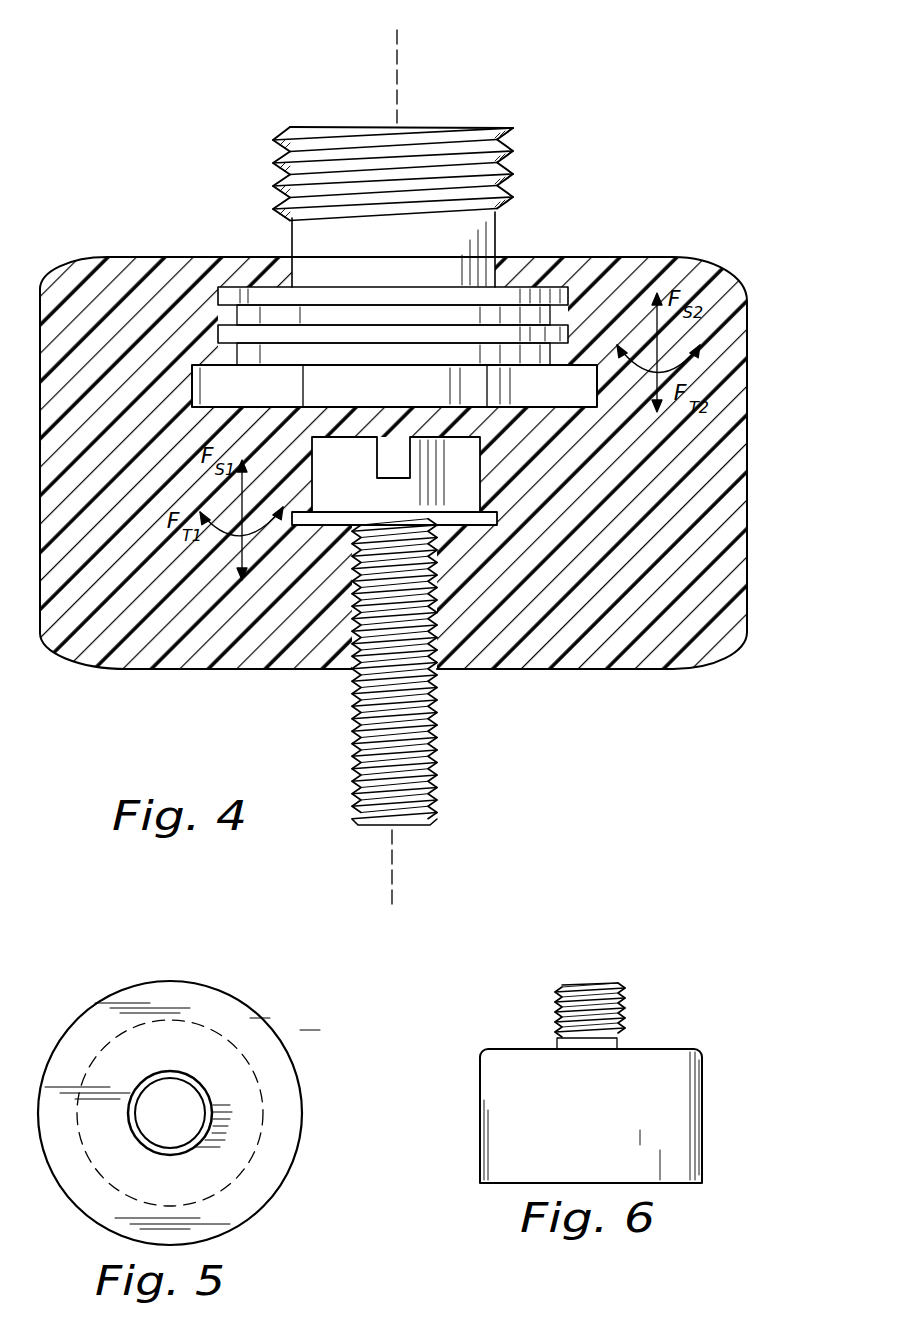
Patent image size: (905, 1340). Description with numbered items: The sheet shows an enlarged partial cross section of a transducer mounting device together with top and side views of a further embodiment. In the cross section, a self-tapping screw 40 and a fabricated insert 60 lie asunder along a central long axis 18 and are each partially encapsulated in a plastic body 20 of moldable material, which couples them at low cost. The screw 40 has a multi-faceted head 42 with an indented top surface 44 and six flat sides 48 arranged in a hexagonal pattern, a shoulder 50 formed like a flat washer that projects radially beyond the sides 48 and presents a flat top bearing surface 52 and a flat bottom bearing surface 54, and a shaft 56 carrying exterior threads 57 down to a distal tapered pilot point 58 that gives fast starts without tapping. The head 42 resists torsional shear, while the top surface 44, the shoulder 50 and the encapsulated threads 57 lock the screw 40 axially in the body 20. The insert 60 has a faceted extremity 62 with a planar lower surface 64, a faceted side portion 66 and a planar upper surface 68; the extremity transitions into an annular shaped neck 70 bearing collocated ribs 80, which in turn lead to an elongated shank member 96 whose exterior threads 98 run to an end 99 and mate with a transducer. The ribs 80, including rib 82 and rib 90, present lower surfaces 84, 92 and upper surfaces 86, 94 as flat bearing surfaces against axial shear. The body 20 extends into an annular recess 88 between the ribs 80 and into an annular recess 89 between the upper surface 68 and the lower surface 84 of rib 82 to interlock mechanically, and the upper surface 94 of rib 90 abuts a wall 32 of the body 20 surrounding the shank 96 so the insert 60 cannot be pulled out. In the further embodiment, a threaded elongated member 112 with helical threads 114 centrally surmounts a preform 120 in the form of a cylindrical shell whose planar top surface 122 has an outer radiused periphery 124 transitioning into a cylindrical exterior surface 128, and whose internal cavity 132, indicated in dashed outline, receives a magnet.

In FIG. 4, the central long axis 18 is at (397, 48).
In FIG. 4, the plastic body 20 is at (743, 272).
In FIG. 4, the wall 32 is at (265, 257).
In FIG. 4, the self-tapping screw 40 is at (326, 723).
In FIG. 4, the multi-faceted head 42 is at (480, 447).
In FIG. 4, the top surface 44 is at (478, 437).
In FIG. 4, the flat sides 48 is at (442, 482).
In FIG. 4, the shoulder 50 is at (497, 523).
In FIG. 4, the top bearing surface 52 is at (497, 514).
In FIG. 4, the bottom bearing surface 54 is at (467, 527).
In FIG. 4, the shaft 56 is at (436, 721).
In FIG. 4, the exterior threads 57 is at (440, 778).
In FIG. 4, the distal tapered pilot point 58 is at (405, 828).
In FIG. 4, the fabricated insert 60 is at (252, 111).
In FIG. 4, the faceted extremity 62 is at (178, 405).
In FIG. 4, the lower surface 64 is at (200, 408).
In FIG. 4, the faceted side portion 66 is at (377, 402).
In FIG. 4, the upper surface 68 is at (192, 373).
In FIG. 4, the annular shaped neck 70 is at (595, 336).
In FIG. 4, the collocated ribs 80 is at (572, 327).
In FIG. 4, the rib 82 is at (218, 332).
In FIG. 4, the lower surface of rib 82 84 is at (237, 350).
In FIG. 4, the upper surface of rib 86 is at (237, 313).
In FIG. 4, the annular recess 88 is at (523, 322).
In FIG. 4, the annular recess 89 is at (566, 330).
In FIG. 4, the rib 90 is at (193, 257).
In FIG. 4, the lower surface of rib 92 is at (218, 305).
In FIG. 4, the upper surface of rib 90 94 is at (238, 288).
In FIG. 4, the elongated shank member 96 is at (288, 221).
In FIG. 4, the exterior threads 98 is at (283, 150).
In FIG. 4, the end 99 is at (470, 126).
In FIG. 5, the elongated member 112 is at (213, 1103).
In FIG. 6, the elongated member 112 is at (622, 1044).
In FIG. 6, the threads 114 is at (626, 1000).
In FIG. 5, the preform 120 is at (242, 985).
In FIG. 5, the top surface 122 is at (152, 1059).
In FIG. 6, the outer radiused periphery 124 is at (482, 1050).
In FIG. 6, the cylindrical exterior surface 128 is at (552, 1130).
In FIG. 5, the internal cavity 132 is at (132, 1018).